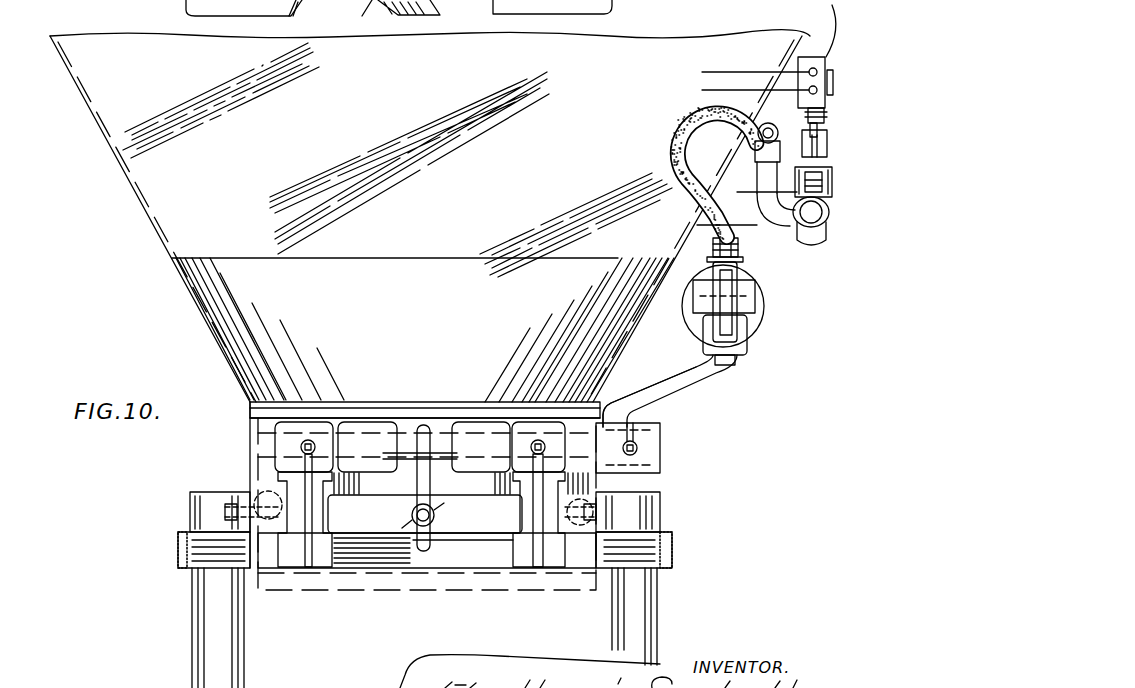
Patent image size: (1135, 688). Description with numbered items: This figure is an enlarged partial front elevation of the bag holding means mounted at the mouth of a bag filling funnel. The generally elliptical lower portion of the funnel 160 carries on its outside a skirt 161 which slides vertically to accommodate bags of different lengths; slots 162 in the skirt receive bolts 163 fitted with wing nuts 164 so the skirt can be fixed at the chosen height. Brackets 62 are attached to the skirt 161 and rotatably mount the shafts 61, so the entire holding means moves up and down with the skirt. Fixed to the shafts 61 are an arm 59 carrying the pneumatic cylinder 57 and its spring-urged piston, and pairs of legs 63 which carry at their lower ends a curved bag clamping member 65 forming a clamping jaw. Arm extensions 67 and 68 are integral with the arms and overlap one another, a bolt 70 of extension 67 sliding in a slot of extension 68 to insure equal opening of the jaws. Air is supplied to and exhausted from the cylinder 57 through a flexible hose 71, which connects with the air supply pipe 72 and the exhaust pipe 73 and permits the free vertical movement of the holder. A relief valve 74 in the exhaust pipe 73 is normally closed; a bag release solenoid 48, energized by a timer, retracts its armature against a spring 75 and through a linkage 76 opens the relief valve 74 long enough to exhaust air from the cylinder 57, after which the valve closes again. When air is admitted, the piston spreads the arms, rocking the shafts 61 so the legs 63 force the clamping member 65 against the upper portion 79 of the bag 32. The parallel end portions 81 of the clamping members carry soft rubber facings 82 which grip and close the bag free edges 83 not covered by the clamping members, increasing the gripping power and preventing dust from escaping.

The bag 32 is at (650, 610).
The bag release solenoid 48 is at (769, 54).
The pneumatic cylinder 57 is at (766, 306).
The arm 59 is at (705, 390).
The shaft 61 is at (415, 432).
The bracket 62 is at (352, 428).
The leg 63 is at (318, 503).
The bag clamping member 65 is at (472, 558).
The arm extension 67 is at (618, 425).
The arm extension 68 is at (660, 434).
The bolt 70 is at (660, 449).
The flexible hose 71 is at (672, 126).
The air supply pipe 72 is at (762, 124).
The exhaust pipe 73 is at (778, 215).
The relief valve 74 is at (818, 242).
The spring 75 is at (806, 116).
The linkage 76 is at (802, 158).
The upper portion of the bag 79 is at (200, 492).
The parallel end portion 81 is at (215, 570).
The soft rubber facing 82 is at (672, 556).
The bag free edge 83 is at (660, 510).
The lower portion of the funnel 160 is at (455, 412).
The skirt 161 is at (408, 412).
The slot 162 is at (256, 440).
The bolt 163 is at (232, 504).
The wing nut 164 is at (272, 491).